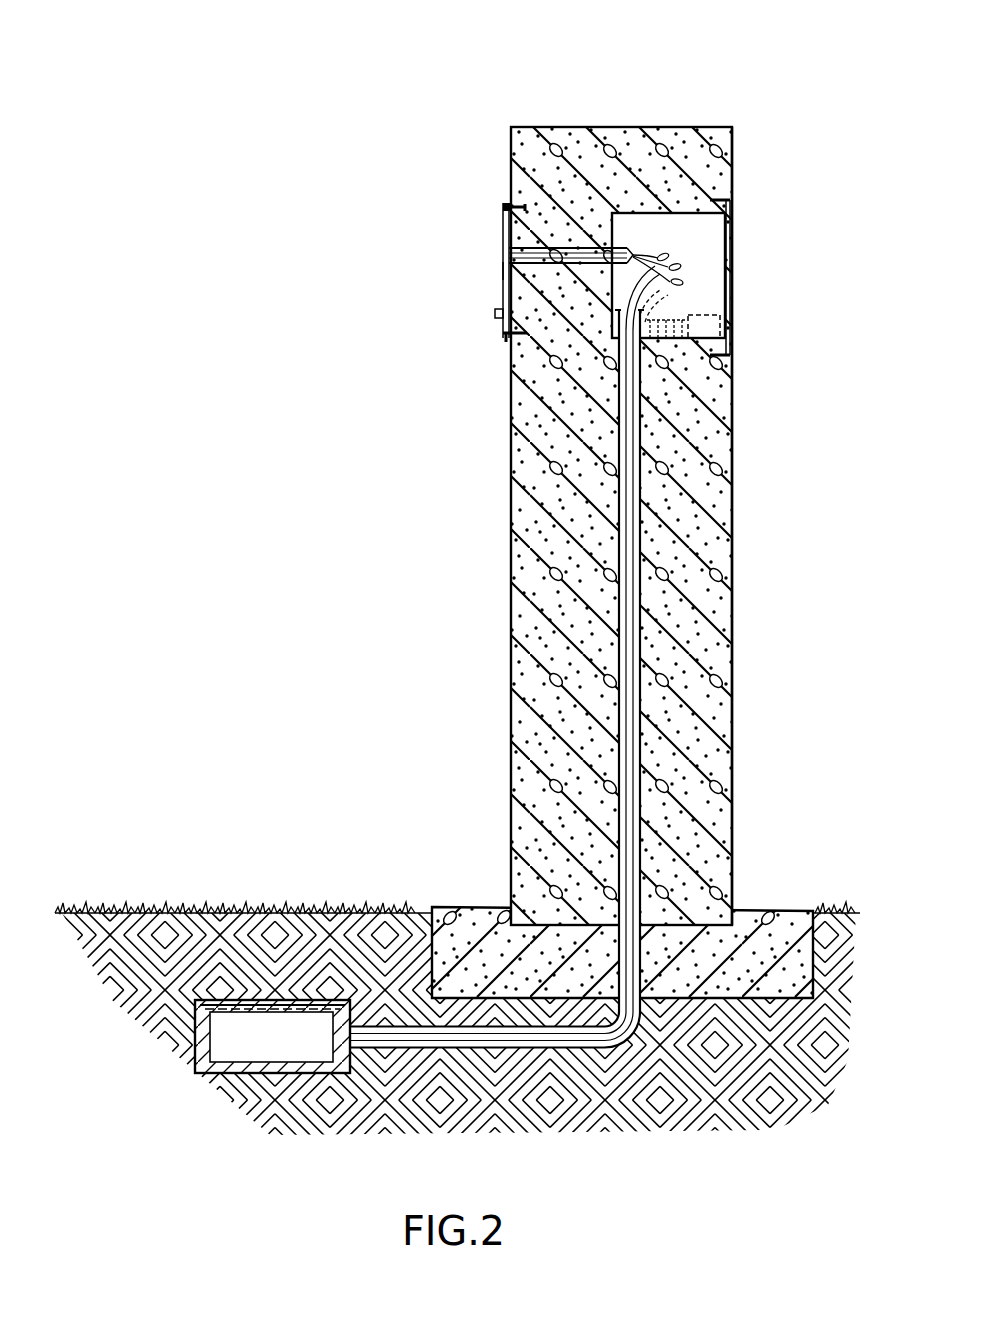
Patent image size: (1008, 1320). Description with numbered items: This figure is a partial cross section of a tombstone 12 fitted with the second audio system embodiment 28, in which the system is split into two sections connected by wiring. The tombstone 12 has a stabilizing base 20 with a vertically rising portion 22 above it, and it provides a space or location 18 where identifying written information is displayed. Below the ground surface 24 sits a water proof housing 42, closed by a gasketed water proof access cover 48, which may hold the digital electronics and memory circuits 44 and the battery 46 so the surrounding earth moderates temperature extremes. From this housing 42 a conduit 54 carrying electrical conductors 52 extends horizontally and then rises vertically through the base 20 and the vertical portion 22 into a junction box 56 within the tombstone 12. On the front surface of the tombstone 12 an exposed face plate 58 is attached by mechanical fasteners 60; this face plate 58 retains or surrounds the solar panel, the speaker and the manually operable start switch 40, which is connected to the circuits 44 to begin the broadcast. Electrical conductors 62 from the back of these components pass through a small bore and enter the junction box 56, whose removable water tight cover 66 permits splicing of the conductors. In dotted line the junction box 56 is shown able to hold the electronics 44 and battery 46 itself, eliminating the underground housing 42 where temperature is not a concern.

The tombstone 12 is at (589, 526).
The space or location for written information 18 is at (509, 525).
The stabilizing base 20 is at (766, 912).
The vertically rising portion 22 is at (733, 728).
The ground surface 24 is at (200, 912).
The second audio system embodiment 28 is at (503, 263).
The start switch 40 is at (496, 314).
The water proof housing 42 is at (195, 1020).
The digital electronics and memory circuits 44 is at (665, 310).
The battery 46 is at (712, 328).
The water proof access cover 48 is at (330, 1010).
The electrical conductors 52 is at (633, 515).
The conduit 54 is at (640, 408).
The junction box 56 is at (672, 235).
The face plate 58 is at (503, 243).
The mechanical fasteners 60 is at (503, 208).
The electrical conductors 62 is at (563, 247).
The water tight cover 66 is at (734, 250).